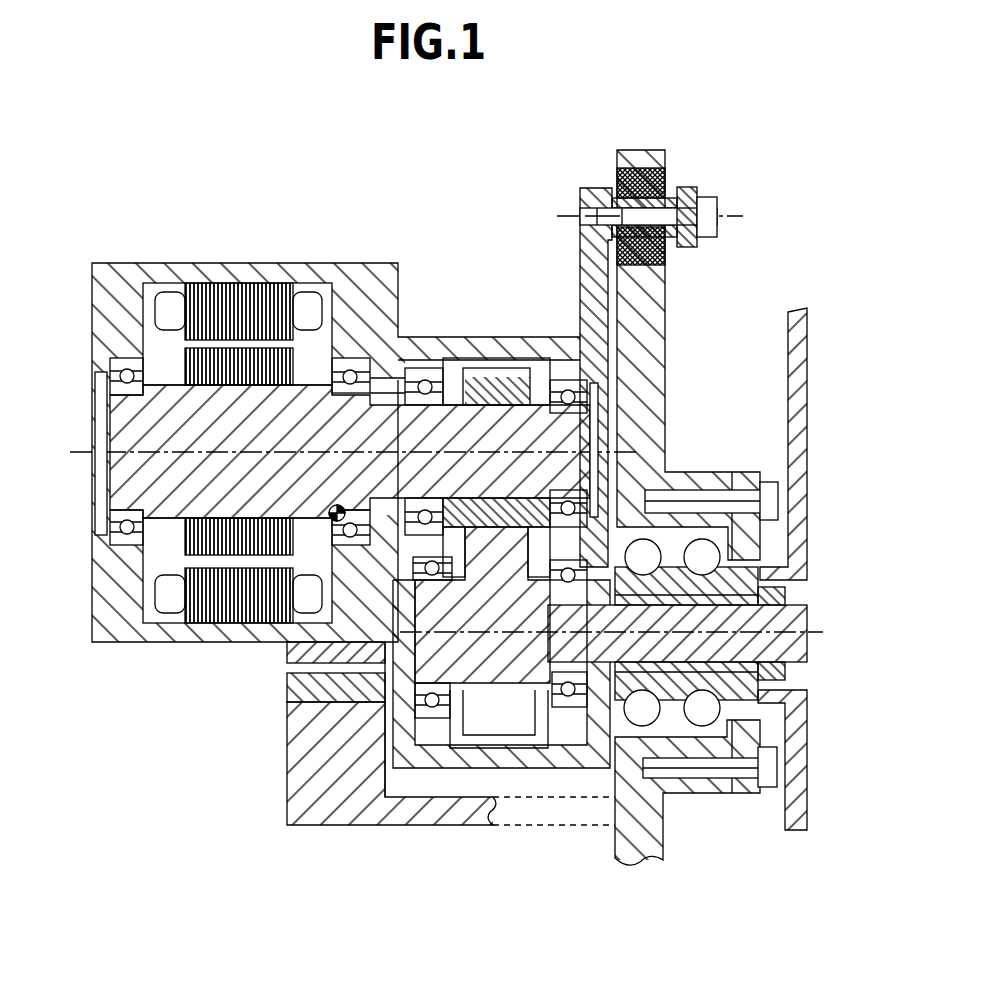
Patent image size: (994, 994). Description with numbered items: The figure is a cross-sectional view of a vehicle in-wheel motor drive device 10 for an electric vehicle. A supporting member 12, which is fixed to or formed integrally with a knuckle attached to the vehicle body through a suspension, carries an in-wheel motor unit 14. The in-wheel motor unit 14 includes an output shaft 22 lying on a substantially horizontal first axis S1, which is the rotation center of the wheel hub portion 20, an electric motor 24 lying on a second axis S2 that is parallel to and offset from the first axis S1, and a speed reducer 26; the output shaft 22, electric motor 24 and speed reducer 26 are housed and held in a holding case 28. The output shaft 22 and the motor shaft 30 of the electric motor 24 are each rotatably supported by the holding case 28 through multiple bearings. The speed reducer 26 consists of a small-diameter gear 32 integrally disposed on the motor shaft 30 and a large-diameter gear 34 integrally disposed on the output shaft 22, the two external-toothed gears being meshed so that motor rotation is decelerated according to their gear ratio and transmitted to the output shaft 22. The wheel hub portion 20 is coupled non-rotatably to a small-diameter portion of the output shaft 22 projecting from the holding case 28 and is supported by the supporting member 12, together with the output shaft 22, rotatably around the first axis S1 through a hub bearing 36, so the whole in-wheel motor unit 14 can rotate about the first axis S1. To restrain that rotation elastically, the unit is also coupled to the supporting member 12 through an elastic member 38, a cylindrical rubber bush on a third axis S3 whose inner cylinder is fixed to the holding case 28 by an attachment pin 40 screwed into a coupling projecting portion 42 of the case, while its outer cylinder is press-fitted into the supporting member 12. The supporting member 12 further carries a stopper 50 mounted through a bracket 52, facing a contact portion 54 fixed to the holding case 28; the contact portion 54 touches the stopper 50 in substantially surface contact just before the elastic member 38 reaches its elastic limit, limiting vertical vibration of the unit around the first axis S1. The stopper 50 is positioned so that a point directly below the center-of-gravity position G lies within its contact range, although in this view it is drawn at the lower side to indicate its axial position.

The vehicle in-wheel motor drive device 10 is at (738, 146).
The supporting member 12 is at (645, 338).
The in-wheel motor unit 14 is at (205, 218).
The wheel hub portion 20 is at (800, 400).
The output shaft 22 is at (792, 614).
The electric motor 24 is at (262, 262).
The speed reducer 26 is at (482, 508).
The holding case 28 is at (365, 282).
The motor shaft 30 is at (452, 362).
The small-diameter gear 32 is at (517, 372).
The large-diameter gear 34 is at (510, 737).
The hub bearing 36 is at (684, 510).
The elastic member 38 is at (606, 178).
The attachment pin 40 is at (713, 228).
The coupling projecting portion 42 is at (585, 290).
The stopper 50 is at (287, 687).
The bracket 52 is at (373, 813).
The contact portion 54 is at (287, 655).
The first axis S1 is at (629, 632).
The second axis S2 is at (331, 452).
The third axis S3 is at (667, 217).
The center-of-gravity position G is at (327, 501).